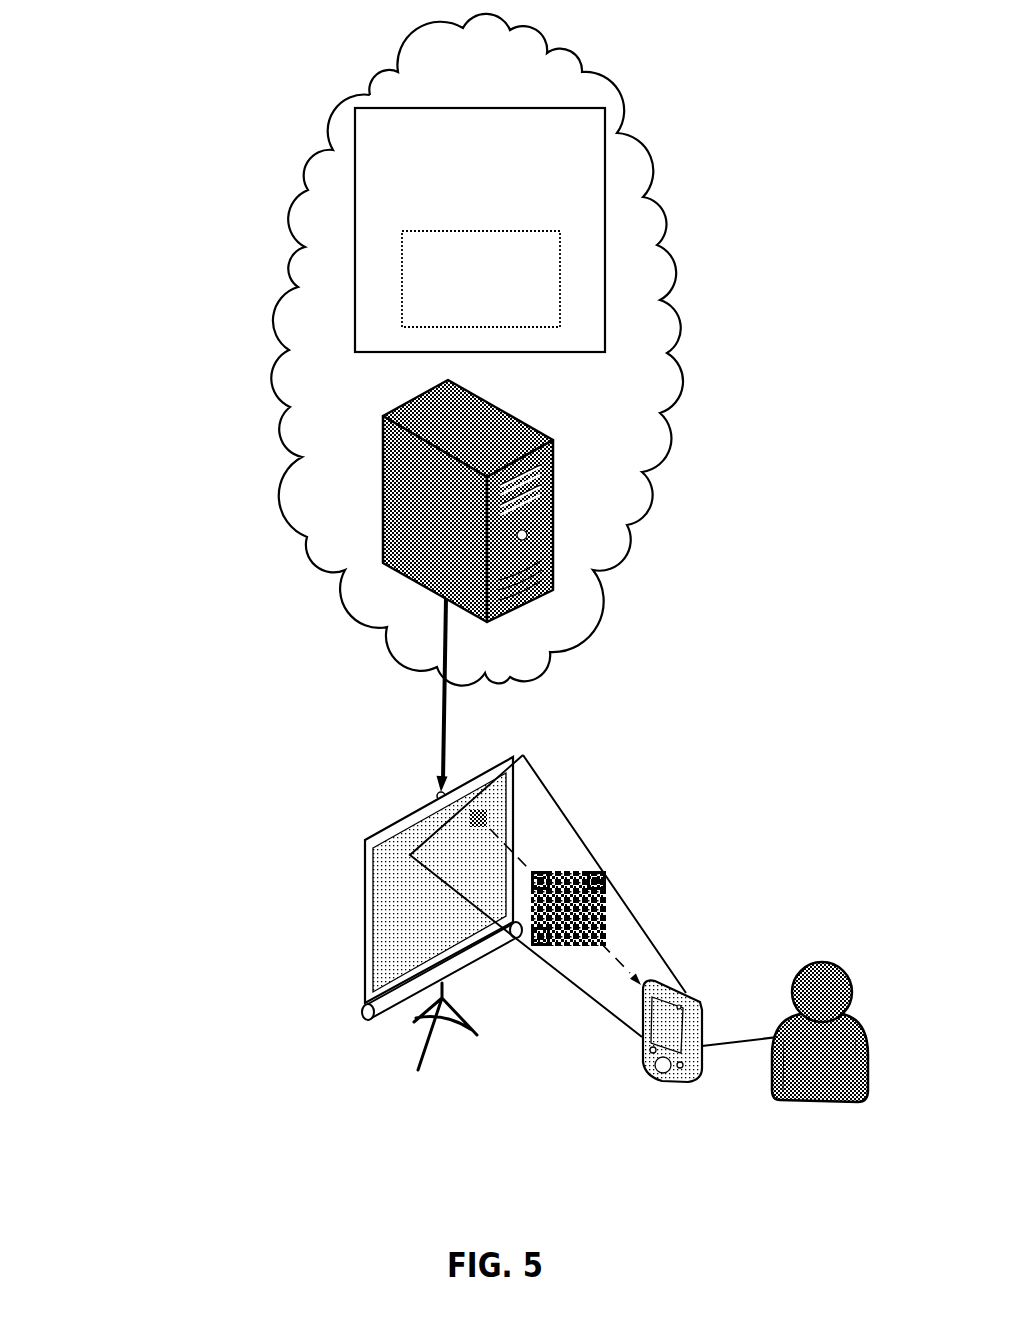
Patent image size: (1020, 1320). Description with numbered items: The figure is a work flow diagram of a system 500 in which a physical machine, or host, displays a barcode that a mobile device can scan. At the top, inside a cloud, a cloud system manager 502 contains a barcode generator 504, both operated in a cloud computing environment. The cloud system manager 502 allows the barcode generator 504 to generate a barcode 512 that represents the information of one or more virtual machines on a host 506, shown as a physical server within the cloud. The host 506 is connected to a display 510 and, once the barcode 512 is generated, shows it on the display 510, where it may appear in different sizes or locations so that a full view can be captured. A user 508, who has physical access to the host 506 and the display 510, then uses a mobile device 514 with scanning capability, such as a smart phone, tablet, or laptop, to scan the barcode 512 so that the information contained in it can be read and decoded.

The system 500 is at (150, 182).
The cloud system manager 502 is at (460, 216).
The barcode generator 504 is at (460, 318).
The host 506 is at (415, 583).
The user 508 is at (818, 1105).
The display 510 is at (443, 915).
The barcode 512 is at (492, 814).
The mobile device 514 is at (663, 1080).